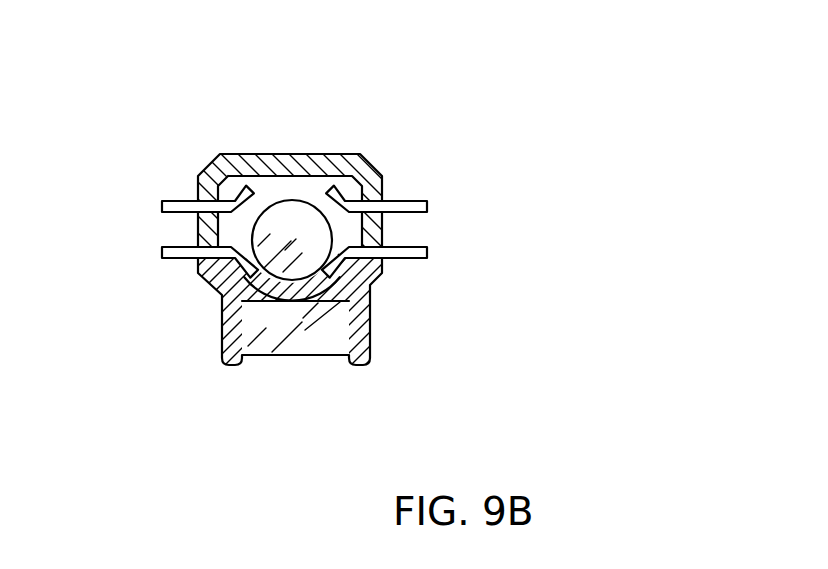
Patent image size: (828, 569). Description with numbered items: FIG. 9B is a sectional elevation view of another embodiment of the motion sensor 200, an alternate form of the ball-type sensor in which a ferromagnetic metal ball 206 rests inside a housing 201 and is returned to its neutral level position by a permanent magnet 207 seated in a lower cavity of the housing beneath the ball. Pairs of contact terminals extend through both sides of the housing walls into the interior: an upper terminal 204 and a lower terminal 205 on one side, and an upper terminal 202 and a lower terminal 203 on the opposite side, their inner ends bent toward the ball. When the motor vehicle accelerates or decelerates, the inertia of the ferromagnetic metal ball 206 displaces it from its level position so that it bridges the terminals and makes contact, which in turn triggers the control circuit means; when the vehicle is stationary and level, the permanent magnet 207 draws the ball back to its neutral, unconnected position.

The switch assembly 200 is at (344, 247).
The housing 201 is at (342, 154).
The upper right terminal lead 202 is at (418, 201).
The lower right terminal lead 203 is at (412, 258).
The upper left terminal lead 204 is at (182, 201).
The lower left terminal lead 205 is at (180, 258).
The ferromagnetic metal ball 206 is at (256, 281).
The permanent magnet 207 is at (282, 341).